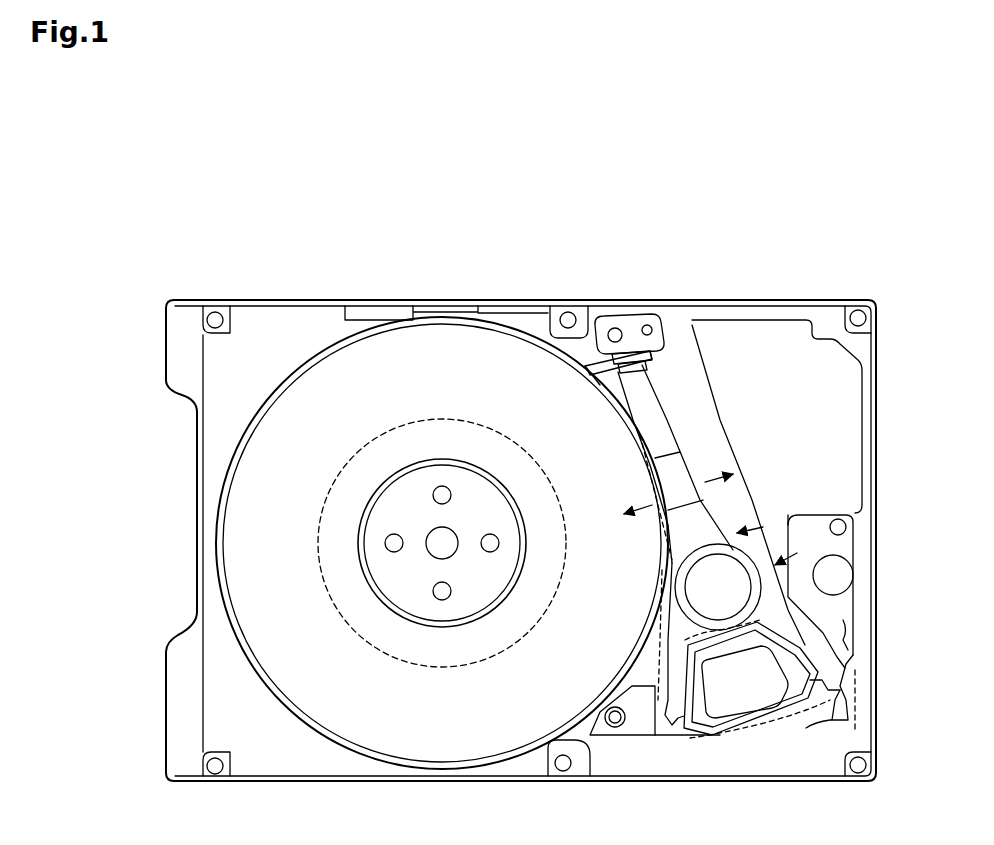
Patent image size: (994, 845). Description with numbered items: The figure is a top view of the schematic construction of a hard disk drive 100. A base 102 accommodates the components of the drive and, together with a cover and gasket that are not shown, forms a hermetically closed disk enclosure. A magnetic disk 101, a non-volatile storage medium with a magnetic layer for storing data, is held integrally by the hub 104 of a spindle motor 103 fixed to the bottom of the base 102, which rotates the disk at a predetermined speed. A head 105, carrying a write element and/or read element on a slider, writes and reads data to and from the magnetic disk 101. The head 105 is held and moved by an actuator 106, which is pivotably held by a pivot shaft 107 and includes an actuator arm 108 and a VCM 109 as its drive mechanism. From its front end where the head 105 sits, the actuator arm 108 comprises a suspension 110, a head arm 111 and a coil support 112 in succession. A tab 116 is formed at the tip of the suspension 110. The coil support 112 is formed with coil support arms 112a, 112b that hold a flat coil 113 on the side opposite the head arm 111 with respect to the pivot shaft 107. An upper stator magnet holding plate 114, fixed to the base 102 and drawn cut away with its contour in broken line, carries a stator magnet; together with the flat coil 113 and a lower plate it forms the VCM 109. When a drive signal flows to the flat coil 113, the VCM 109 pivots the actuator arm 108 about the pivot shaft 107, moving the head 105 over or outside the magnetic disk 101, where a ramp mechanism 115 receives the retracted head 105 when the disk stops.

The hard disk drive 100 is at (862, 253).
The magnetic disk 101 is at (417, 747).
The base 102 is at (232, 731).
The spindle motor 103 is at (345, 527).
The hub 104 is at (457, 606).
The head 105 is at (640, 376).
The actuator 106 is at (795, 548).
The pivot shaft 107 is at (700, 592).
The actuator arm 108 is at (838, 513).
The VCM (voice coil motor) 109 is at (724, 747).
The suspension 110 is at (650, 408).
The head arm 111 is at (700, 508).
The coil support 112 is at (646, 630).
The coil support arm 112a is at (667, 717).
The coil support arm 112b is at (850, 681).
The flat coil 113 is at (767, 706).
The upper stator magnet holding plate 114 is at (845, 628).
The ramp mechanism 115 is at (600, 318).
The tab 116 is at (618, 377).